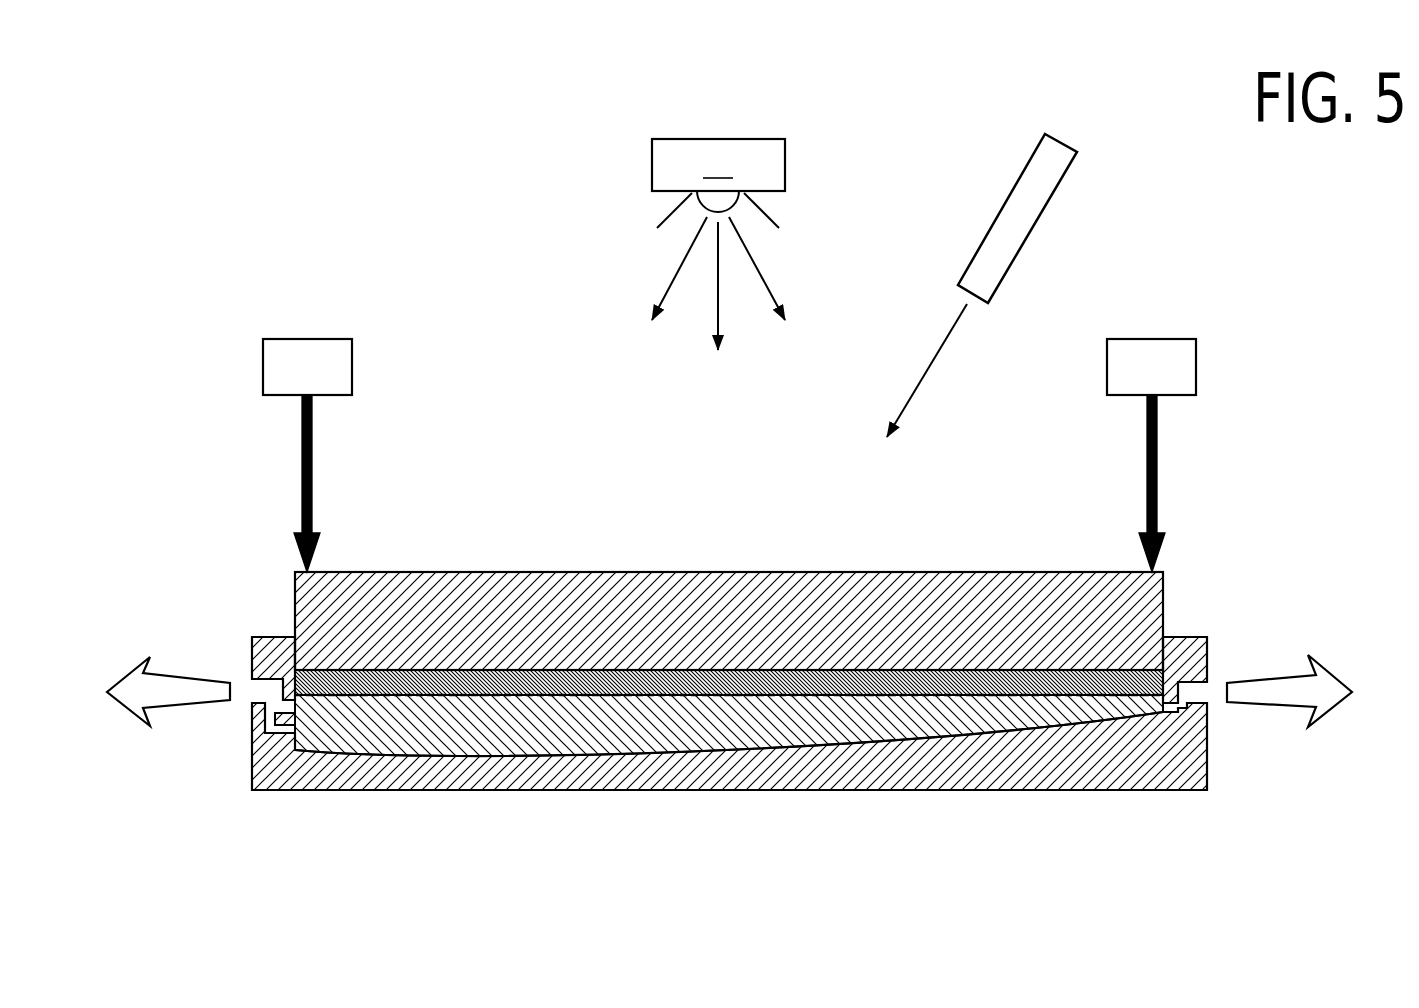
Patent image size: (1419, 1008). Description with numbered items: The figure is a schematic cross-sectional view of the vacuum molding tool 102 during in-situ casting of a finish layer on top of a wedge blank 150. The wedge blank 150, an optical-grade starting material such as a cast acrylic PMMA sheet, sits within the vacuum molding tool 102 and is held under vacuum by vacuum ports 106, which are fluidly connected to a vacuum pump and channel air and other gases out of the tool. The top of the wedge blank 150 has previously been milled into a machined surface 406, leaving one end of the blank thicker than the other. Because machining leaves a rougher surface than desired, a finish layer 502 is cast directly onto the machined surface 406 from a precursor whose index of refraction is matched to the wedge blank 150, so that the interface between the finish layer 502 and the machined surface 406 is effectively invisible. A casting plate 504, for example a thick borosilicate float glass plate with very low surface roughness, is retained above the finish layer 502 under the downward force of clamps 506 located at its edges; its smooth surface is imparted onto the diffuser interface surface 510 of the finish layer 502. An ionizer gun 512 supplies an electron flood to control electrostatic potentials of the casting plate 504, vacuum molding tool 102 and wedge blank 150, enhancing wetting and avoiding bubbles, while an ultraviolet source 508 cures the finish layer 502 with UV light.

The vacuum molding tool 102 is at (412, 793).
The vacuum ports 106 is at (242, 678).
The wedge blank 150 is at (583, 740).
The machined surface 406 is at (350, 698).
The finish layer 502 is at (397, 688).
The casting plate 504 is at (464, 572).
The clamps 506 is at (263, 358).
The ultraviolet source 508 is at (652, 152).
The diffuser interface surface 510 is at (650, 668).
The ionizer gun 512 is at (1015, 187).